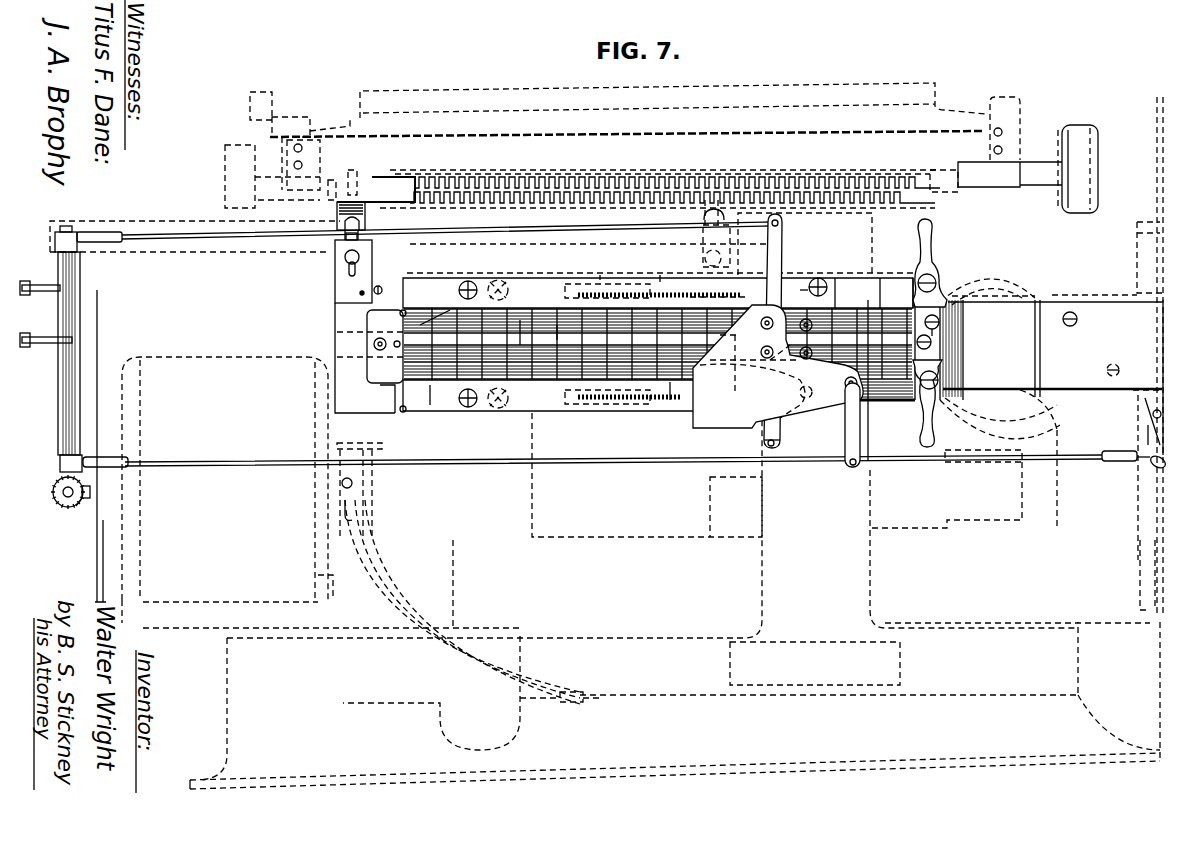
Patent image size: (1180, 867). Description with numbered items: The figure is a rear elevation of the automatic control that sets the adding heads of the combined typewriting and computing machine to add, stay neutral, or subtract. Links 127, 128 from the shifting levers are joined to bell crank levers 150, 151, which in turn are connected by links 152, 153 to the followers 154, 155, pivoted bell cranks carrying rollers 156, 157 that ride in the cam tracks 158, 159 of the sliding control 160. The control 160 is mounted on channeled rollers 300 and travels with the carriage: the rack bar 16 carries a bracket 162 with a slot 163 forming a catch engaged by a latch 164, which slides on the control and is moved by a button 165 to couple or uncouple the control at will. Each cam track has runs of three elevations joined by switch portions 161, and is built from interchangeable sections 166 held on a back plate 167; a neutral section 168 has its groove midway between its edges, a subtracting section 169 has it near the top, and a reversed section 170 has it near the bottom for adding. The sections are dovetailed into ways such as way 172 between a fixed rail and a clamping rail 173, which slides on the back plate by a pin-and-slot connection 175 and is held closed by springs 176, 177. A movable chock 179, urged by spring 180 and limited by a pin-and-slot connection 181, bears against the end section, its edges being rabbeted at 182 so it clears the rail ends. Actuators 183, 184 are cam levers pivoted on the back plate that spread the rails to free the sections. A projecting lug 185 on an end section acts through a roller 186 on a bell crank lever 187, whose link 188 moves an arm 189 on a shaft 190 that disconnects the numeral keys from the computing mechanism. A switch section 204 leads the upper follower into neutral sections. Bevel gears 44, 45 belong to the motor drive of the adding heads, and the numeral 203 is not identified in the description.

The rack bar 16 is at (452, 195).
The bevel gear 44 is at (55, 486).
The bevel gear 45 is at (80, 508).
The link 127 is at (36, 293).
The link 128 is at (60, 343).
The bell crank lever 150 is at (70, 262).
The bell crank lever 151 is at (60, 360).
The link 152 is at (195, 240).
The link 153 is at (462, 460).
The follower 154 is at (780, 250).
The follower 155 is at (780, 437).
The roller 156 is at (810, 327).
The roller 157 is at (778, 391).
The cam track 158 is at (940, 323).
The cam track 159 is at (935, 346).
The control 160 is at (560, 420).
The switch portion 161 is at (560, 320).
The bracket 162 is at (337, 208).
The slot 163 is at (344, 240).
The latch 164 is at (644, 254).
The button 165 is at (345, 259).
The section 166 is at (426, 320).
The back plate 167 is at (367, 399).
The neutral section 168 is at (915, 287).
The subtracting section 169 is at (525, 318).
The adding section 170 is at (853, 293).
The way 172 is at (940, 334).
The clamping rail 173 is at (598, 278).
The pin-and-slot connection 175 is at (465, 281).
The spring 176 is at (662, 285).
The spring 177 is at (668, 400).
The movable chock 179 is at (385, 346).
The spring 180 is at (450, 345).
The pin-and-slot connection 181 is at (370, 344).
The rabbet 182 is at (403, 310).
The actuator 183 is at (934, 232).
The actuator 184 is at (938, 422).
The projecting lug 185 is at (924, 375).
The roller 186 is at (839, 425).
The bell crank lever 187 is at (862, 423).
The link 188 is at (978, 462).
The arm 189 is at (1150, 430).
The shaft 190 is at (1152, 413).
The knurled strip 203 is at (717, 296).
The switch section 204 is at (794, 283).
The channeled roller 300 is at (496, 280).